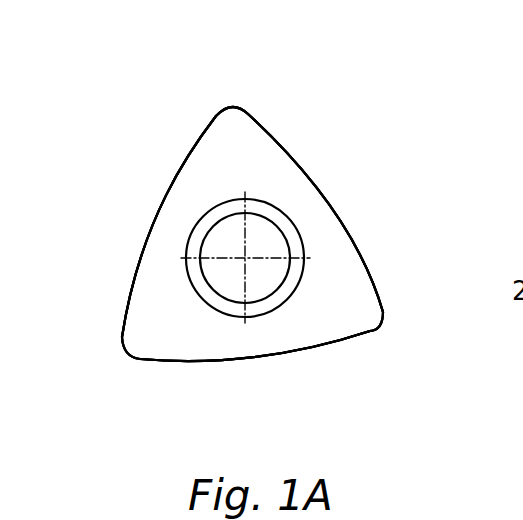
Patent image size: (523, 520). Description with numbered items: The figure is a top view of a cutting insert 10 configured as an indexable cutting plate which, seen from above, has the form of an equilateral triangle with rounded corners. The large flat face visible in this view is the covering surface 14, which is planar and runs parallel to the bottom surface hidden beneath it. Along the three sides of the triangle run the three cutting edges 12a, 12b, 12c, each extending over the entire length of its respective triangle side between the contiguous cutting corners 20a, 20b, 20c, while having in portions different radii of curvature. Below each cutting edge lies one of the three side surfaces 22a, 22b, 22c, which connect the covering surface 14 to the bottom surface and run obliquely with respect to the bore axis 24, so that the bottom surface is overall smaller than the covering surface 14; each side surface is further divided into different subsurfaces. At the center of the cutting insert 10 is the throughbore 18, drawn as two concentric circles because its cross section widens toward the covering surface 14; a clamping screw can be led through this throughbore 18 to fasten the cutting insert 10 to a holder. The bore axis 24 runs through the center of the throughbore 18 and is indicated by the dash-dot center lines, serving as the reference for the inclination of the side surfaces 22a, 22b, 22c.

The cutting insert 10 is at (298, 95).
The covering surface 14 is at (255, 148).
The cutting edge 12a is at (159, 212).
The cutting edge 12b is at (325, 200).
The cutting edge 12c is at (242, 362).
The throughbore 18 is at (272, 248).
The cutting corner 20a is at (120, 350).
The cutting corner 20b is at (230, 108).
The cutting corner 20c is at (385, 318).
The side surface 22a is at (127, 292).
The side surface 22b is at (380, 282).
The side surface 22c is at (176, 369).
The bore axis 24 is at (247, 263).